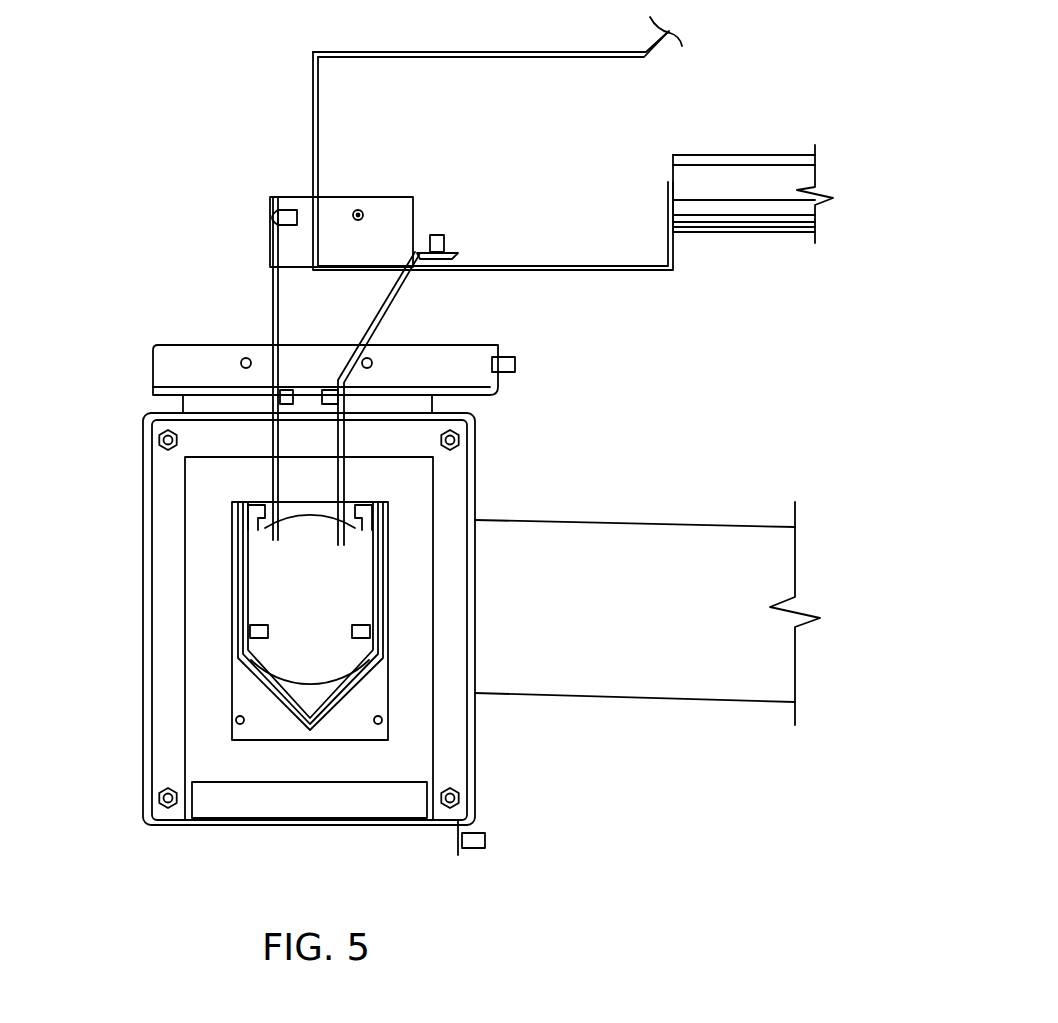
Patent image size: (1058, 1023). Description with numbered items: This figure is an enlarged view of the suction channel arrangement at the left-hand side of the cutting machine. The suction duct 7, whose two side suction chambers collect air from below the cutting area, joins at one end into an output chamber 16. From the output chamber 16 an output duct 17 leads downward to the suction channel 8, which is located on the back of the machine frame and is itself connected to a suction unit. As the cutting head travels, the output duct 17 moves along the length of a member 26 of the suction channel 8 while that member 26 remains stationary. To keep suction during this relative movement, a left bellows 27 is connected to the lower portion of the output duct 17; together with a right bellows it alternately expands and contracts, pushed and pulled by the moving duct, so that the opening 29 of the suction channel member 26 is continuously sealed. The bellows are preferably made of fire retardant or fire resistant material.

The suction duct 7 is at (332, 90).
The output chamber 16 is at (352, 80).
The output duct 17 is at (297, 303).
The member of the suction channel 26 is at (237, 515).
The left bellows 27 is at (210, 655).
The opening of the suction channel member 29 is at (308, 533).
The suction channel 8 is at (297, 660).